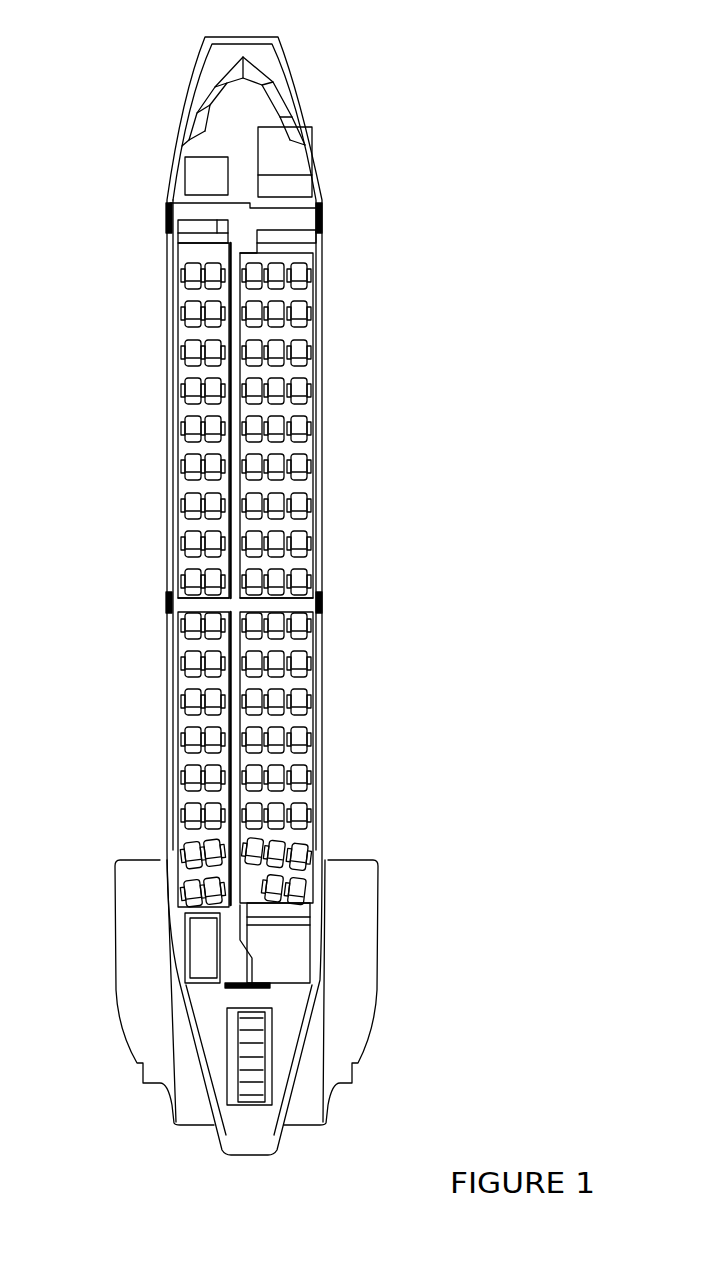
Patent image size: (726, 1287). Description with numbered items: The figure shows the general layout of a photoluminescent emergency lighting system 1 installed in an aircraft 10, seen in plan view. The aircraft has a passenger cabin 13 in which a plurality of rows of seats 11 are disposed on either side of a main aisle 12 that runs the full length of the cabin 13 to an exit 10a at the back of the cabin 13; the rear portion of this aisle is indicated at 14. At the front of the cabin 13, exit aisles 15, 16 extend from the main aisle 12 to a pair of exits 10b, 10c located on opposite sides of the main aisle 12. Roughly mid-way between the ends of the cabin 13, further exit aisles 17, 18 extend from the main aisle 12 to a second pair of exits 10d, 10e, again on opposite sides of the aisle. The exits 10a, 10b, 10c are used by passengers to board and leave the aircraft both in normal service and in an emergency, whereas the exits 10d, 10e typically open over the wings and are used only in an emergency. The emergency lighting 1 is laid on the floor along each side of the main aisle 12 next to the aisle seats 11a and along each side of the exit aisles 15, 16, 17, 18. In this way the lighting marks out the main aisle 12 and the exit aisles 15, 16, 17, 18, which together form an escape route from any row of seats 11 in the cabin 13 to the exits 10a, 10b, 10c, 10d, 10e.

The photoluminescent emergency lighting system 1 is at (190, 508).
The aircraft 10 is at (402, 459).
The exit 10a is at (265, 988).
The exit 10b is at (321, 215).
The exit 10c is at (168, 214).
The exit 10d is at (325, 606).
The exit 10e is at (167, 604).
The rows of seats 11 is at (300, 742).
The aisle seats 11a is at (215, 776).
The main aisle 12 is at (240, 430).
The passenger cabin 13 is at (323, 345).
The rear aisle 14 is at (237, 727).
The exit aisle 15 is at (322, 233).
The exit aisle 16 is at (168, 231).
The exit aisle 17 is at (293, 598).
The exit aisle 18 is at (185, 597).